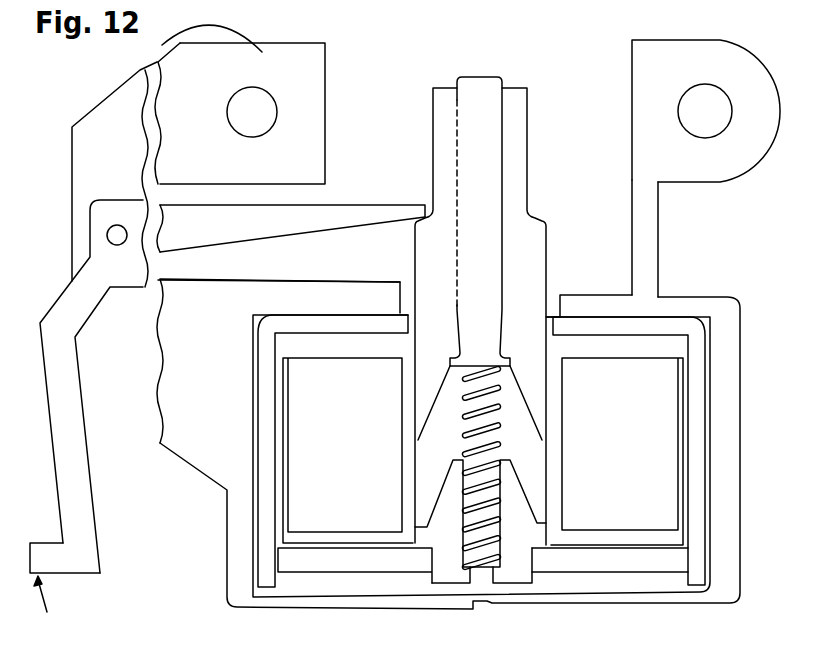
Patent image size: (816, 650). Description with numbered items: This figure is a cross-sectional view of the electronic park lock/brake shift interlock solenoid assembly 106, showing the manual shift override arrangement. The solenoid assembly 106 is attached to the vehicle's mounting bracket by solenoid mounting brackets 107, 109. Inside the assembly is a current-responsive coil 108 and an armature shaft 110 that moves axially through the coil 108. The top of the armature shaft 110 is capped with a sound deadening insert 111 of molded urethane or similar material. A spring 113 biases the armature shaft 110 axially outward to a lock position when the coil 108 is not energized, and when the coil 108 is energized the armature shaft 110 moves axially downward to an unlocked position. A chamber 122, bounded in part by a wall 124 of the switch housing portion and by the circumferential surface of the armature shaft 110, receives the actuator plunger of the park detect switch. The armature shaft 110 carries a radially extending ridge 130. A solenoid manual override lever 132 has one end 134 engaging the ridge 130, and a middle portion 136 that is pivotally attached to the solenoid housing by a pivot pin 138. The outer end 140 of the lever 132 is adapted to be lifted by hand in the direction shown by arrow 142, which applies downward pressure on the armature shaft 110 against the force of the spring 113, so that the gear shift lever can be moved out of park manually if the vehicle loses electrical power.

The shift interlock solenoid assembly 106 is at (705, 291).
The solenoid mounting bracket 107 is at (764, 60).
The coil 108 is at (290, 498).
The solenoid mounting bracket 109 is at (157, 51).
The armature shaft 110 is at (528, 147).
The sound deadening insert 111 is at (484, 75).
The spring 113 is at (458, 422).
The chamber 122 is at (367, 117).
The wall 124 is at (650, 153).
The ridge 130 is at (423, 222).
The solenoid manual override lever 132 is at (137, 197).
The lever end 134 is at (421, 201).
The middle portion 136 is at (88, 233).
The pivot pin 138 is at (117, 225).
The outer end 140 is at (47, 543).
The arrow 142 is at (47, 597).